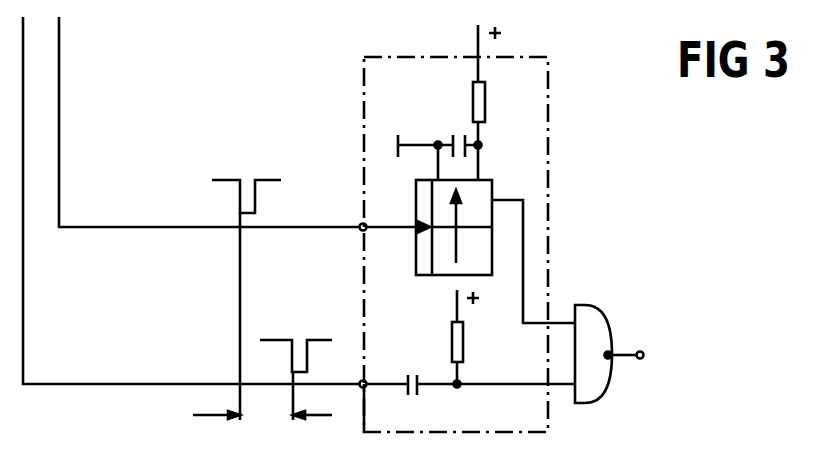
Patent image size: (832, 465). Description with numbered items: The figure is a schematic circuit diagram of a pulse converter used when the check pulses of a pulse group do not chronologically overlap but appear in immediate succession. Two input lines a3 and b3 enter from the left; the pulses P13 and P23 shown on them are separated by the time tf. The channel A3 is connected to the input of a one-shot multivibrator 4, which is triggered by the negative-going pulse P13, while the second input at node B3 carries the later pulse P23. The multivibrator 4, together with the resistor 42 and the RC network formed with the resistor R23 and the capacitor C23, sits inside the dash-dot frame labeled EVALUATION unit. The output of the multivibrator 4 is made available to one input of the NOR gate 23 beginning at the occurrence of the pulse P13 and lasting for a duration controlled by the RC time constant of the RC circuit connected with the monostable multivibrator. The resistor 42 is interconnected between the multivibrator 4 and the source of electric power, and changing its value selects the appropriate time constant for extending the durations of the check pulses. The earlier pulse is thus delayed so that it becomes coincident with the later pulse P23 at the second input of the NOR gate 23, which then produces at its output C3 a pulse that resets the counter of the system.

The one-shot multivibrator 4 is at (483, 251).
The NOR gate 23 is at (593, 331).
The resistor 42 is at (496, 102).
The resistor R23 is at (482, 339).
The capacitor C23 is at (481, 366).
The pulse P13 is at (246, 275).
The pulse P23 is at (296, 358).
The channel A3 is at (347, 207).
The input node B3 is at (347, 364).
The output C3 is at (642, 356).
The input line a3 is at (237, 122).
The input line b3 is at (215, 200).
The time tf is at (262, 408).
The evaluation unit EVALUATION is at (540, 167).